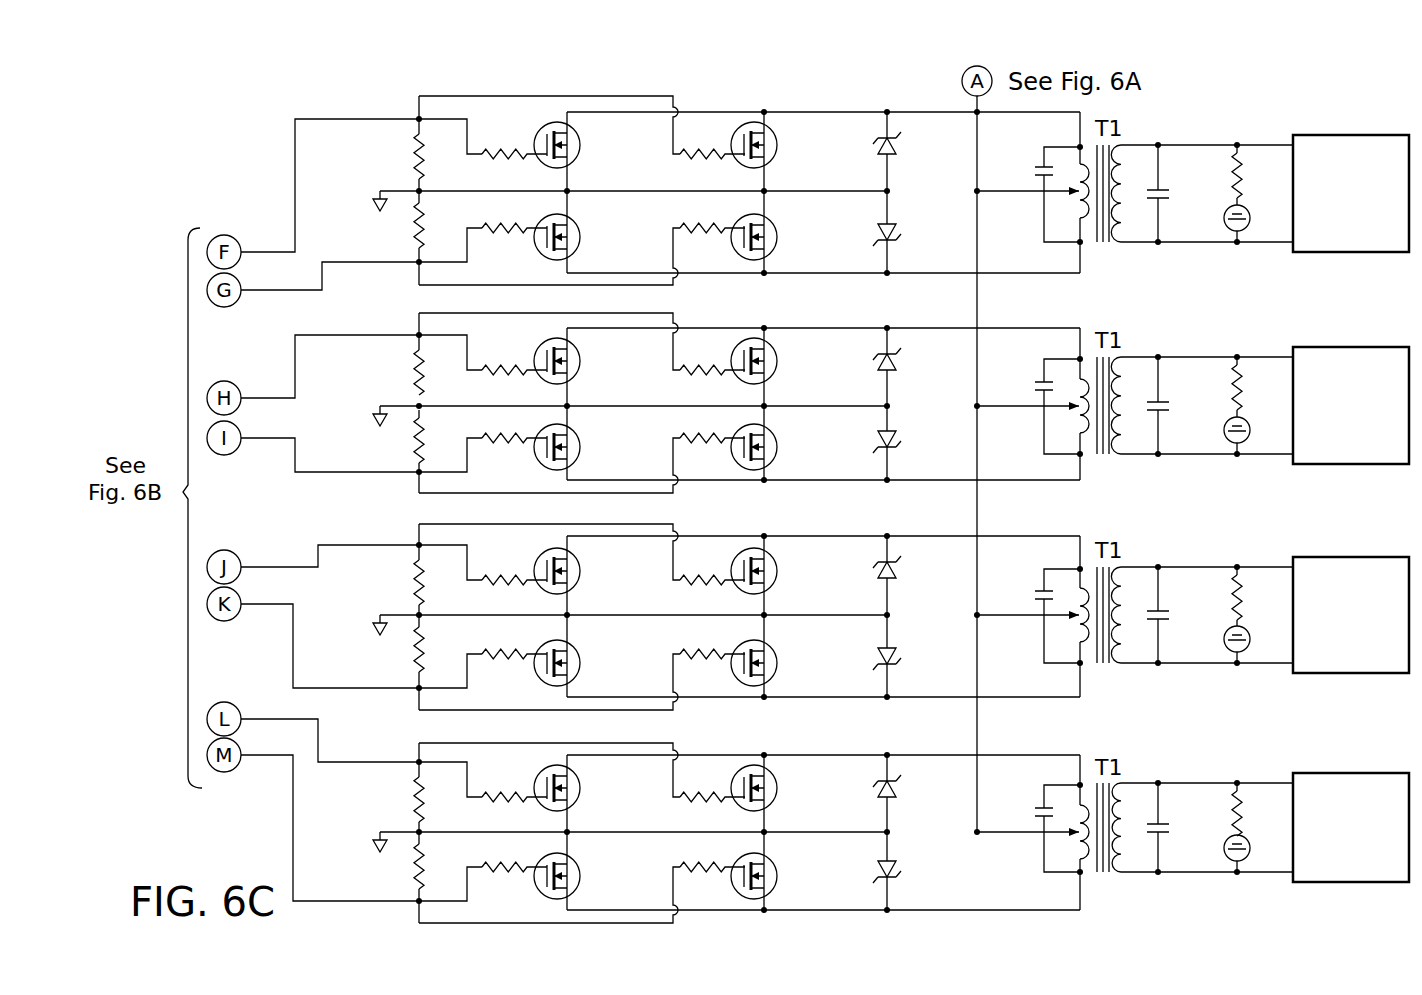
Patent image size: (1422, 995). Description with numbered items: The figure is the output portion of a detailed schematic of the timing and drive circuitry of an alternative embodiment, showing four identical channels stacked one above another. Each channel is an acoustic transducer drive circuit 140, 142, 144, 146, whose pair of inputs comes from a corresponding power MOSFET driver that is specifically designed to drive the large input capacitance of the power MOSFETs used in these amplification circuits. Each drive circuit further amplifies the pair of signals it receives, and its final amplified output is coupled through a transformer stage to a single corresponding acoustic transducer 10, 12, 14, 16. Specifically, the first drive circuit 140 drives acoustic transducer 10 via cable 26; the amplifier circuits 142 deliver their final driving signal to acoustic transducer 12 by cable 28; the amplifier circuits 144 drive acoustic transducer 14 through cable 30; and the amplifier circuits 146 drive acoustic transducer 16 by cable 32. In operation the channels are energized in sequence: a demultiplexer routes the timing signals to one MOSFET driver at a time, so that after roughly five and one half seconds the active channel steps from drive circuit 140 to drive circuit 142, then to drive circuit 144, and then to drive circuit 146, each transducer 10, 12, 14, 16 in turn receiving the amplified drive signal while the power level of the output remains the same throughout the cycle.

The acoustic transducer 10 is at (1337, 208).
The acoustic transducer 12 is at (1337, 420).
The acoustic transducer 14 is at (1337, 629).
The acoustic transducer 16 is at (1337, 842).
The cable 26 is at (1240, 141).
The cable 28 is at (1236, 351).
The cable 30 is at (1238, 560).
The cable 32 is at (1238, 772).
The acoustic transducer drive circuit 140 is at (770, 110).
The acoustic transducer drive circuit 142 is at (770, 324).
The acoustic transducer drive circuit 144 is at (770, 532).
The acoustic transducer drive circuit 146 is at (770, 750).